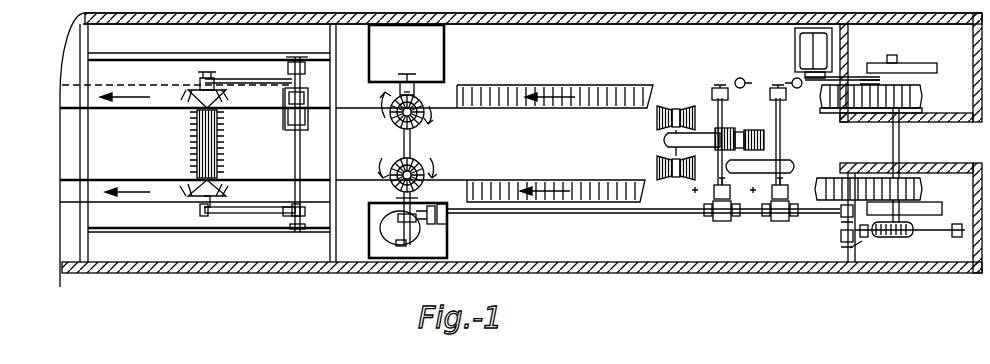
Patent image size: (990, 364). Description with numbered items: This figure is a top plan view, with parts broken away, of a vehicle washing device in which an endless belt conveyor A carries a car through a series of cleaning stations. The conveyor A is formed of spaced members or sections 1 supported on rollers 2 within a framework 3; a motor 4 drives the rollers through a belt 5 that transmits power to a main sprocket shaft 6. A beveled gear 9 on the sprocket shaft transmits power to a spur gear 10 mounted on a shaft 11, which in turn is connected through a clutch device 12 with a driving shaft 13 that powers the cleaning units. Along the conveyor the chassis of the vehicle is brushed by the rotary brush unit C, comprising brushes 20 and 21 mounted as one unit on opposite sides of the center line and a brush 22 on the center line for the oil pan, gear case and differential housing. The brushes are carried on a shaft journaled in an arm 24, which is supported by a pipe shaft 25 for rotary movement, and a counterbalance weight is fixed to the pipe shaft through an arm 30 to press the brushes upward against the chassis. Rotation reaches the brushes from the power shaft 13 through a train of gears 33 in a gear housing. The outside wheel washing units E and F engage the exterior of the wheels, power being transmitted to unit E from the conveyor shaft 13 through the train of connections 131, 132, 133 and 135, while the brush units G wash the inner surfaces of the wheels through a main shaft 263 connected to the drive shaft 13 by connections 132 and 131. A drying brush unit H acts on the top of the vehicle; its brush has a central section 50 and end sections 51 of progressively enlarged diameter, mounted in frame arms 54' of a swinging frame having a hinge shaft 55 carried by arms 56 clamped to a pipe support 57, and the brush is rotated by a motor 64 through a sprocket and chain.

The spaced members or sections 1 is at (508, 150).
The rollers 2 is at (874, 168).
The framework 3 is at (745, 187).
The motor 4 is at (800, 50).
The belt 5 is at (862, 78).
The main sprocket shaft 6 is at (900, 135).
The beveled gear 9 is at (890, 240).
The spur gear 10 is at (915, 240).
The shaft 11 is at (863, 240).
The clutch device 12 is at (852, 240).
The driving shaft 13 is at (657, 215).
The brush 20 is at (657, 120).
The brush 21 is at (657, 168).
The brush 22 is at (722, 126).
The arm 24 is at (808, 163).
The pipe shaft 25 is at (782, 132).
The arm 30 is at (792, 80).
The train of gears 33 is at (735, 220).
The central section 50 is at (218, 163).
The end sections 51 is at (196, 98).
The frame arms 54' is at (248, 56).
The hinge shaft 55 is at (288, 168).
The arms 56 is at (297, 62).
The pipe support 57 is at (301, 158).
The motor 64 is at (306, 124).
The train of connections 131 is at (400, 228).
The train of connections 132 is at (398, 218).
The train of connections 133 is at (436, 200).
The train of connections 135 is at (398, 202).
The main shaft 263 is at (398, 137).
The endless belt conveyor A is at (567, 110).
The rotary brush unit C is at (702, 96).
The brush unit E is at (426, 230).
The brush unit F is at (446, 60).
The brush units G is at (423, 159).
The brush unit H is at (138, 148).